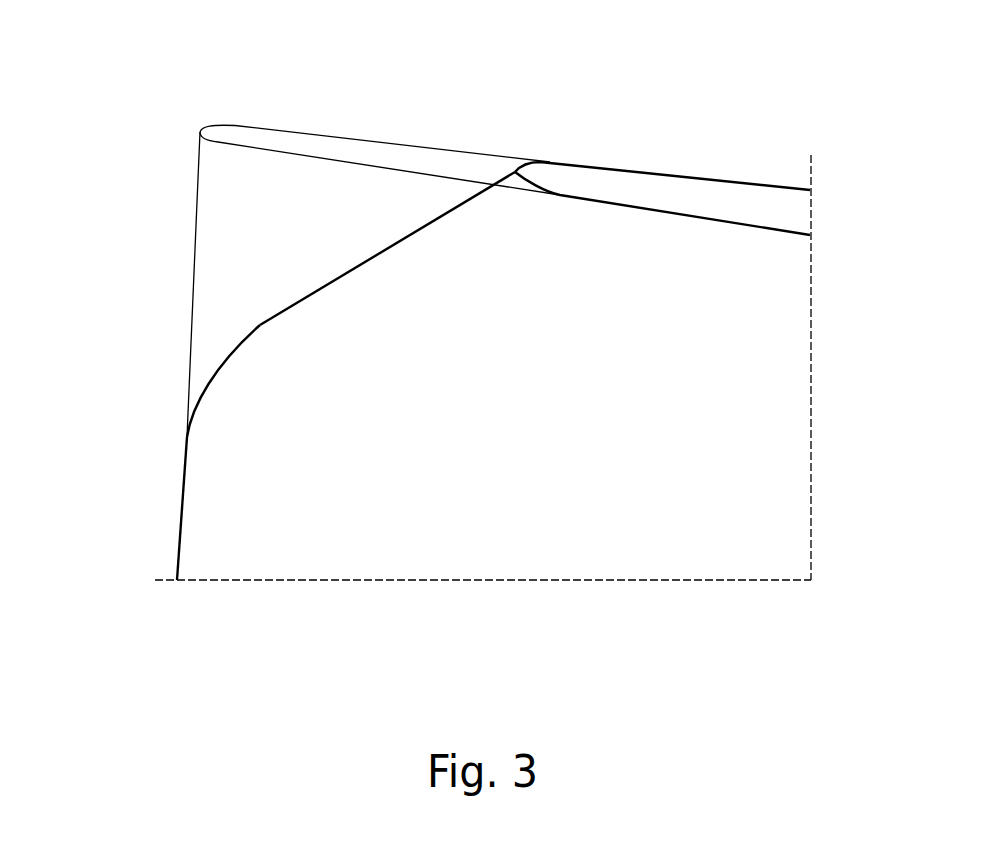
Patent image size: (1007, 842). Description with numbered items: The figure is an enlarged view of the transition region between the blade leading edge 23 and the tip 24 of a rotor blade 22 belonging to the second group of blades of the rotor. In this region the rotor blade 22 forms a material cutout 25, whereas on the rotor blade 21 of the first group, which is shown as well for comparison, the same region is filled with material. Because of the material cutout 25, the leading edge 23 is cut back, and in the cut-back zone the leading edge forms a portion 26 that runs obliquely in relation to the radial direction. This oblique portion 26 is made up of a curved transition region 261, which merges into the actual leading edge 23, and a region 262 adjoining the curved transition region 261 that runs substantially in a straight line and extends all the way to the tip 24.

The rotor blade of the first group 21 is at (207, 182).
The rotor blade of the second group 22 is at (556, 562).
The blade leading edge 23 is at (178, 530).
The tip 24 is at (650, 187).
The material cutout 25 is at (303, 218).
The obliquely running portion of the leading edge 26 is at (287, 332).
The curved transition region 261 is at (228, 365).
The substantially straight region 262 is at (417, 227).